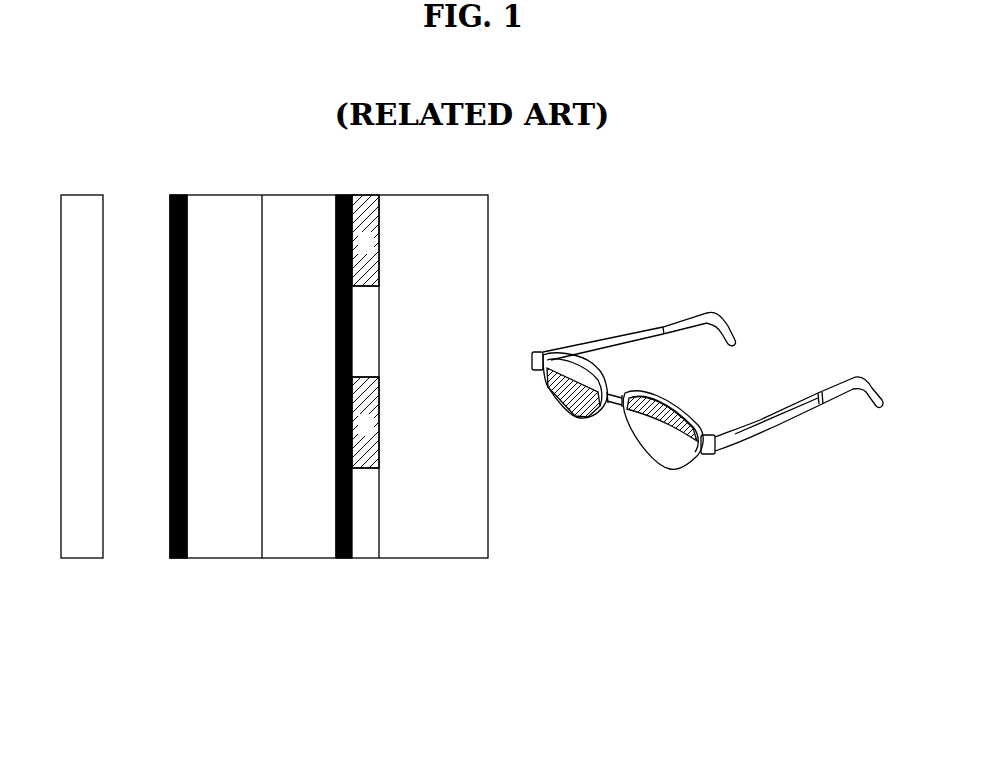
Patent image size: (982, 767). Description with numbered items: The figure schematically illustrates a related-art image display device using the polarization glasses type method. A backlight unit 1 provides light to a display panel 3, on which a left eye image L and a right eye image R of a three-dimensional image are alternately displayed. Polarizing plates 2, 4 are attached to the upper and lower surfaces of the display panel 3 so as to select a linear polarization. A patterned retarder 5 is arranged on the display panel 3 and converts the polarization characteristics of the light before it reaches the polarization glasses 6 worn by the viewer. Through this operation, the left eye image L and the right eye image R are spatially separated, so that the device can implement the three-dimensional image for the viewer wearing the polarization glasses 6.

The backlight unit 1 is at (82, 559).
The polarizing plate 2 is at (177, 559).
The display panel 3 is at (188, 579).
The polarizing plate 4 is at (344, 559).
The patterned retarder 5 is at (488, 579).
The polarization glasses 6 is at (628, 330).